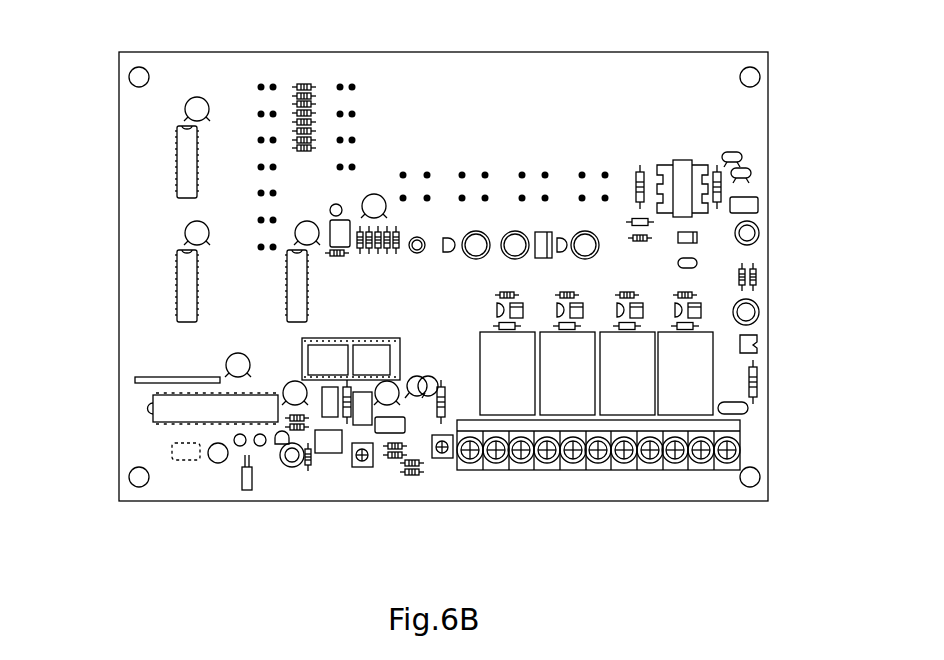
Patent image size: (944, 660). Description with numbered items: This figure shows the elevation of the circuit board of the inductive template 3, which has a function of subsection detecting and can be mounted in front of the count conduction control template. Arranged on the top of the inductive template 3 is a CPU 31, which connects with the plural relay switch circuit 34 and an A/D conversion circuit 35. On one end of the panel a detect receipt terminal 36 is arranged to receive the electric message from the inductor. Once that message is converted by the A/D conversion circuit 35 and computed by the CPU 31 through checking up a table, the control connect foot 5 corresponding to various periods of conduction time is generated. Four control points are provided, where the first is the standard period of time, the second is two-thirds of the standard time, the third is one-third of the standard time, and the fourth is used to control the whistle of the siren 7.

The inductive template 3 is at (116, 211).
The CPU 31 is at (168, 408).
The siren 7 is at (292, 467).
The A/D conversion circuit 35 is at (363, 468).
The detect receipt terminal 36 is at (470, 466).
The control connect foot 5 is at (598, 495).
The plural relay switch circuit 34 is at (718, 380).